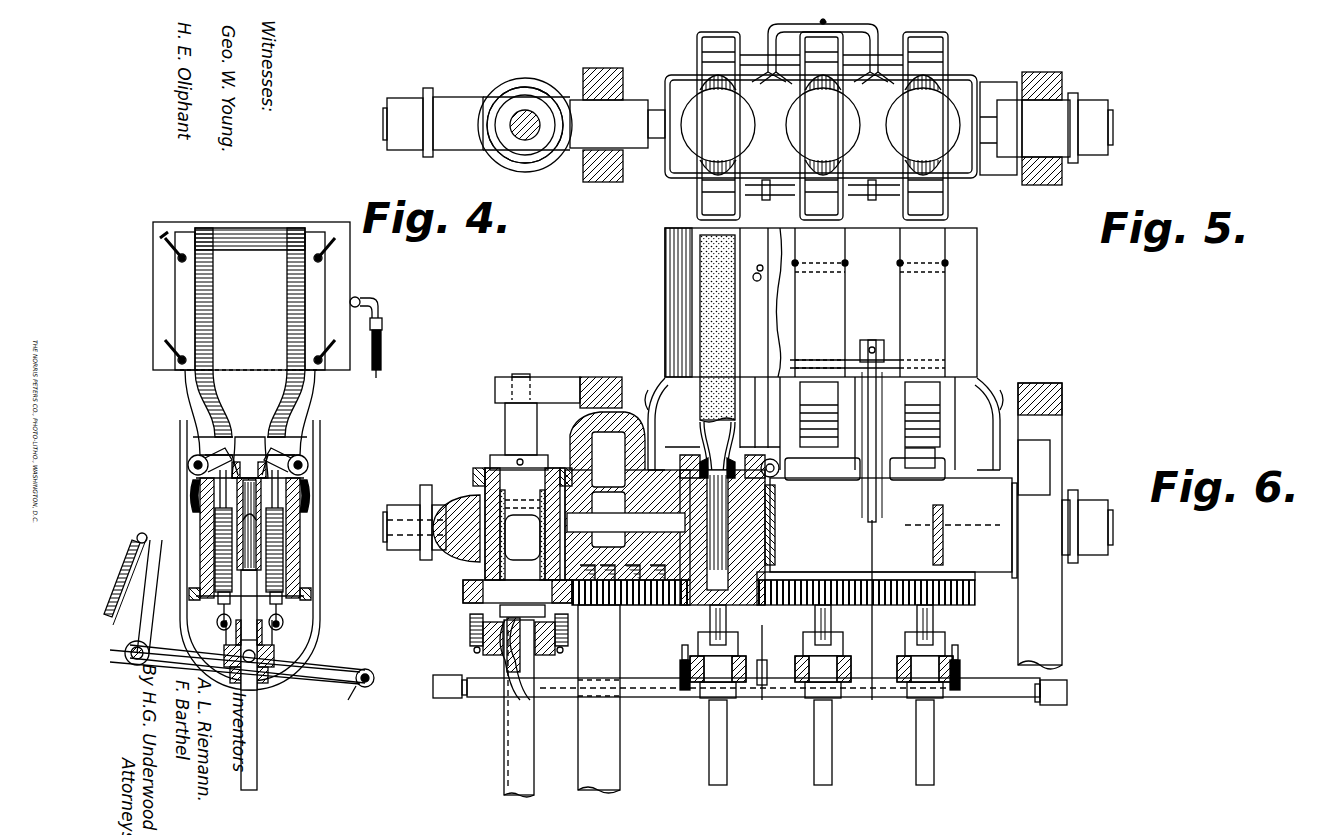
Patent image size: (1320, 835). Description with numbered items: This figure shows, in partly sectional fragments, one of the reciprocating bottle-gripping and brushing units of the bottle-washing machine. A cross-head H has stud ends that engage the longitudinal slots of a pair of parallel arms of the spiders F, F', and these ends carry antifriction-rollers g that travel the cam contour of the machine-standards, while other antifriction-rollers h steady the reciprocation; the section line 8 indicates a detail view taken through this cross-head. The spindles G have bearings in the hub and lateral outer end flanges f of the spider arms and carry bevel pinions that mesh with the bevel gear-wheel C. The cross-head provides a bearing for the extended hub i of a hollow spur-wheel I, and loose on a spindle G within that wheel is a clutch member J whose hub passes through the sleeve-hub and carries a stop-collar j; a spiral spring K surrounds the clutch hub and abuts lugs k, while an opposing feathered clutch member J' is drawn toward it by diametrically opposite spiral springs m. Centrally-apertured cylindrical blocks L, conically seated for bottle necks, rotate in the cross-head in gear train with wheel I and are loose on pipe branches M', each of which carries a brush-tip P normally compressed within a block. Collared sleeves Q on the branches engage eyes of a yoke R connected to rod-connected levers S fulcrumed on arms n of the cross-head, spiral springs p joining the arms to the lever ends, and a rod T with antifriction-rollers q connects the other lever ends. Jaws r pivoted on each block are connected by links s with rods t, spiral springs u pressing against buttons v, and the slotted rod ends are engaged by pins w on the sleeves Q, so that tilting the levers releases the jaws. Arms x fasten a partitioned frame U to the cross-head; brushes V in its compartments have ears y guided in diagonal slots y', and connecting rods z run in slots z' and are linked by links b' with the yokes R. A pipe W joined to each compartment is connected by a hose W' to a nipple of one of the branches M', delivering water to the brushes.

In FIG. 4, the frame U is at (150, 300).
In FIG. 5, the frame U is at (686, 72).
In FIG. 6, the frame U is at (660, 294).
In FIG. 4, the brushes V is at (305, 240).
In FIG. 5, the brushes V is at (820, 125).
In FIG. 6, the brushes V is at (950, 400).
In FIG. 4, the pipe W is at (371, 321).
In FIG. 5, the pipe W is at (821, 49).
In FIG. 6, the pipe W is at (732, 356).
In FIG. 4, the hose W' is at (398, 357).
In FIG. 4, the ears of the brushes y is at (277, 261).
In FIG. 5, the ears of the brushes y is at (842, 126).
In FIG. 6, the ears of the brushes y is at (846, 283).
In FIG. 4, the diagonal slots y' is at (250, 245).
In FIG. 5, the diagonal slots y' is at (683, 190).
In FIG. 6, the diagonal slots y' is at (885, 282).
In FIG. 4, the rods z is at (250, 352).
In FIG. 5, the rods z is at (822, 125).
In FIG. 6, the rods z is at (845, 418).
In FIG. 4, the diagonal slots z' is at (247, 362).
In FIG. 4, the jaws r is at (205, 455).
In FIG. 6, the jaws r is at (822, 470).
In FIG. 4, the links s is at (188, 460).
In FIG. 4, the rods t is at (193, 493).
In FIG. 6, the rods t is at (726, 628).
In FIG. 4, the spiral springs u is at (220, 505).
In FIG. 4, the pins w is at (292, 528).
In FIG. 4, the cross-head H is at (300, 540).
In FIG. 5, the cross-head H is at (617, 124).
In FIG. 6, the cross-head H is at (887, 529).
In FIG. 4, the cylindrical blocks L is at (300, 558).
In FIG. 6, the cylindrical blocks L is at (745, 505).
In FIG. 4, the links b' is at (266, 555).
In FIG. 5, the links b' is at (820, 201).
In FIG. 6, the links b' is at (820, 626).
In FIG. 4, the brush-tip P is at (134, 548).
In FIG. 6, the brush-tip P is at (730, 552).
In FIG. 4, the fulcrum-arms n is at (149, 593).
In FIG. 6, the fulcrum-arms n is at (945, 552).
In FIG. 4, the buttons v is at (218, 600).
In FIG. 4, the eye o is at (284, 616).
In FIG. 4, the yoke R is at (270, 665).
In FIG. 6, the yoke R is at (760, 703).
In FIG. 4, the levers S is at (330, 666).
In FIG. 6, the levers S is at (684, 658).
In FIG. 4, the antifriction-rollers q is at (372, 667).
In FIG. 4, the collared sleeves Q is at (268, 680).
In FIG. 6, the collared sleeves Q is at (700, 698).
In FIG. 4, the rod T is at (347, 702).
In FIG. 6, the rod T is at (560, 695).
In FIG. 4, the pipe branches M' is at (268, 680).
In FIG. 6, the pipe branches M' is at (822, 742).
In FIG. 5, the spindles G is at (522, 118).
In FIG. 5, the antifriction-rollers g is at (748, 125).
In FIG. 6, the antifriction-rollers g is at (1052, 706).
In FIG. 5, the extended hub i is at (508, 155).
In FIG. 6, the extended hub i is at (500, 482).
In FIG. 5, the stop-collar j is at (525, 140).
In FIG. 5, the standard F'' is at (603, 108).
In FIG. 6, the standard F'' is at (1060, 526).
In FIG. 5, the spider F' is at (1025, 148).
In FIG. 6, the arms x is at (1000, 388).
In FIG. 6, the lateral outer end flanges f is at (558, 414).
In FIG. 6, the bolt j' is at (547, 450).
In FIG. 6, the antifriction-rollers h is at (1083, 448).
In FIG. 6, the lugs k is at (470, 540).
In FIG. 6, the spiral spring K is at (522, 530).
In FIG. 6, the hollow spur-wheel I is at (463, 594).
In FIG. 6, the section line 8 is at (482, 476).
In FIG. 6, the spiral springs m is at (470, 638).
In FIG. 6, the clutch member J' is at (487, 659).
In FIG. 6, the clutch member J is at (519, 708).
In FIG. 6, the bevel gear-wheel C is at (505, 740).
In FIG. 6, the spider F is at (599, 699).
In FIG. 4, the spiral springs p is at (125, 581).